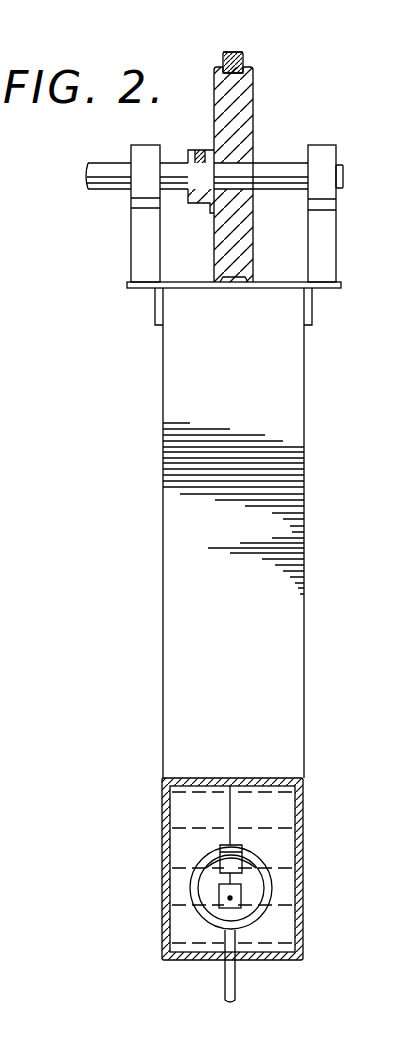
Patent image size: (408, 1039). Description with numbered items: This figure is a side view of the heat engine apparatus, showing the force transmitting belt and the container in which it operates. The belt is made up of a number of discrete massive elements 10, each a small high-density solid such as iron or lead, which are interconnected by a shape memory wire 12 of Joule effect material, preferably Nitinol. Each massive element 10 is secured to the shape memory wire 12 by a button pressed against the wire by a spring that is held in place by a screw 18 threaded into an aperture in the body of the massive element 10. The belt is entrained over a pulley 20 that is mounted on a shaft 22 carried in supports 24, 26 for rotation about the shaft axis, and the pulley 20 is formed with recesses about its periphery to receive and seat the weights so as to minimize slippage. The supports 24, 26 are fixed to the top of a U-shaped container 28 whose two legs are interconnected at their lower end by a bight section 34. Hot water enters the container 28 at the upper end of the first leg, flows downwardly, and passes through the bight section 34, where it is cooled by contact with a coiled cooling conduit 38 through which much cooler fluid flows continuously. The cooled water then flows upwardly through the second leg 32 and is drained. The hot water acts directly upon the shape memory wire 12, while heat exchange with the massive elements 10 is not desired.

The massive element 10 is at (244, 56).
The shape memory wire 12 is at (222, 60).
The screw 18 is at (246, 69).
The pulley 20 is at (253, 100).
The shaft 22 is at (290, 165).
The support 24 is at (131, 242).
The support 26 is at (330, 250).
The U-shaped container 28 is at (142, 535).
The second leg 32 is at (163, 459).
The bight section 34 is at (161, 902).
The coiled cooling conduit 38 is at (270, 893).